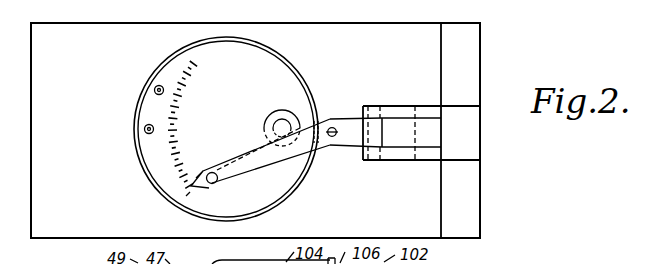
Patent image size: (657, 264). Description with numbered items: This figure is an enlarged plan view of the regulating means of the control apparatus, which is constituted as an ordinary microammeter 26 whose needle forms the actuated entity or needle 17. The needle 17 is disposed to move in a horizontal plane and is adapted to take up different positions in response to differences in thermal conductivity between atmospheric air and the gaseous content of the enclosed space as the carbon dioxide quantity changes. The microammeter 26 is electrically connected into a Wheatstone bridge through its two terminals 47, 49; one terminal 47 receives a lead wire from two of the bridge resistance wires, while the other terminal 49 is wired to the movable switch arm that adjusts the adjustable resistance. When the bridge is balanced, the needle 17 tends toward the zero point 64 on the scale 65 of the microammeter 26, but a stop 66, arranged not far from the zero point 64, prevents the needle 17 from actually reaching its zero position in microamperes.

The microammeter 26 is at (290, 88).
The needle 17 is at (244, 140).
The stop 66 is at (213, 188).
The scale 65 is at (175, 117).
The zero point 64 is at (197, 201).
The terminal 47 is at (155, 84).
The terminal 49 is at (145, 132).